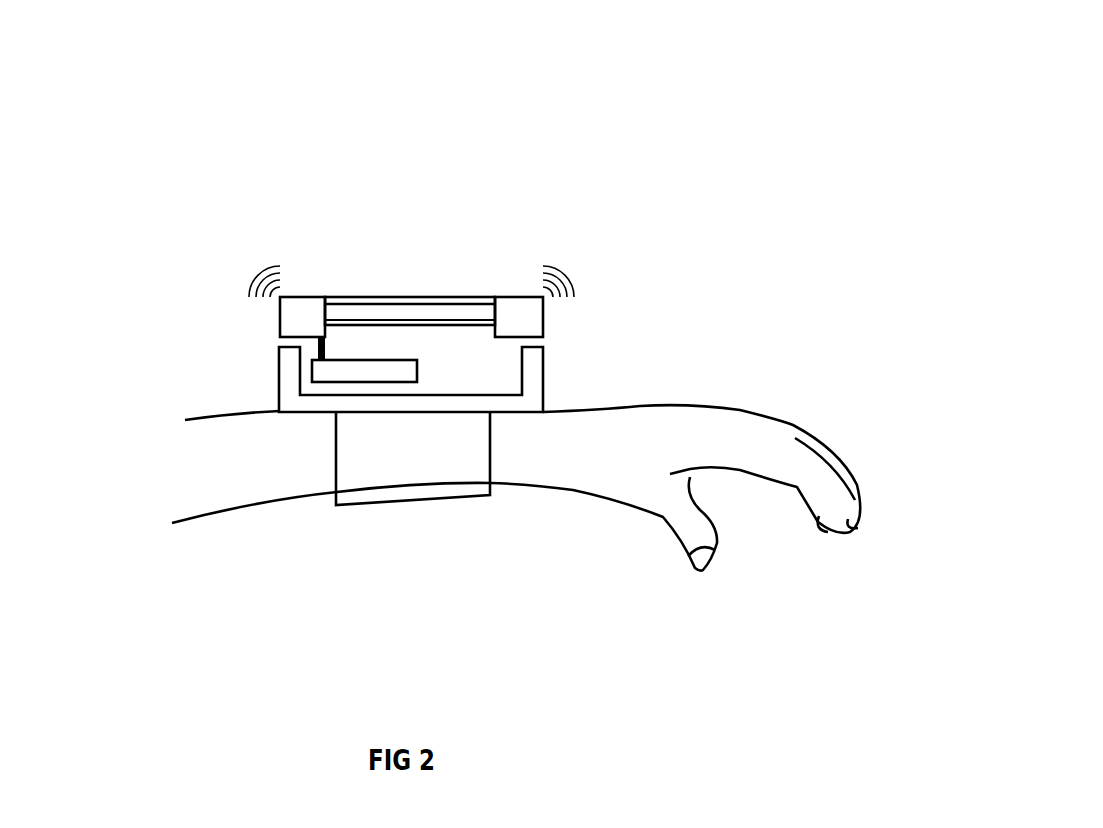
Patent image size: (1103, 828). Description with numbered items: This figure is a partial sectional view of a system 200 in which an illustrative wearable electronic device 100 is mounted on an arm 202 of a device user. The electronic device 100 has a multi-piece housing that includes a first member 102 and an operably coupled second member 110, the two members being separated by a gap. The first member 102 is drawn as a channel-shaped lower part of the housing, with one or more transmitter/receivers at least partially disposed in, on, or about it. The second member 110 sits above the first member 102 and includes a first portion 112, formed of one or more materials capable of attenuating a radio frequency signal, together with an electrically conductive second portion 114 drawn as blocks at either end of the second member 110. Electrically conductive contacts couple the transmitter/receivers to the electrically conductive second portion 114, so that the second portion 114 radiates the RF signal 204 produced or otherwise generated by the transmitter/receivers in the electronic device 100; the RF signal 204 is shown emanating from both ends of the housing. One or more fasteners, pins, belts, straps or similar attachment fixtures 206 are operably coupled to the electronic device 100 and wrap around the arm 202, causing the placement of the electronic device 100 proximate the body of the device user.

The wearable electronic device 100 is at (425, 323).
The first member 102 is at (544, 382).
The second member 110 is at (410, 279).
The first portion 112 is at (362, 308).
The electrically conductive second portion 114 is at (280, 325).
The system 200 is at (999, 109).
The arm 202 is at (740, 408).
The RF signal 204 is at (262, 270).
The attachment fixtures 206 is at (408, 500).